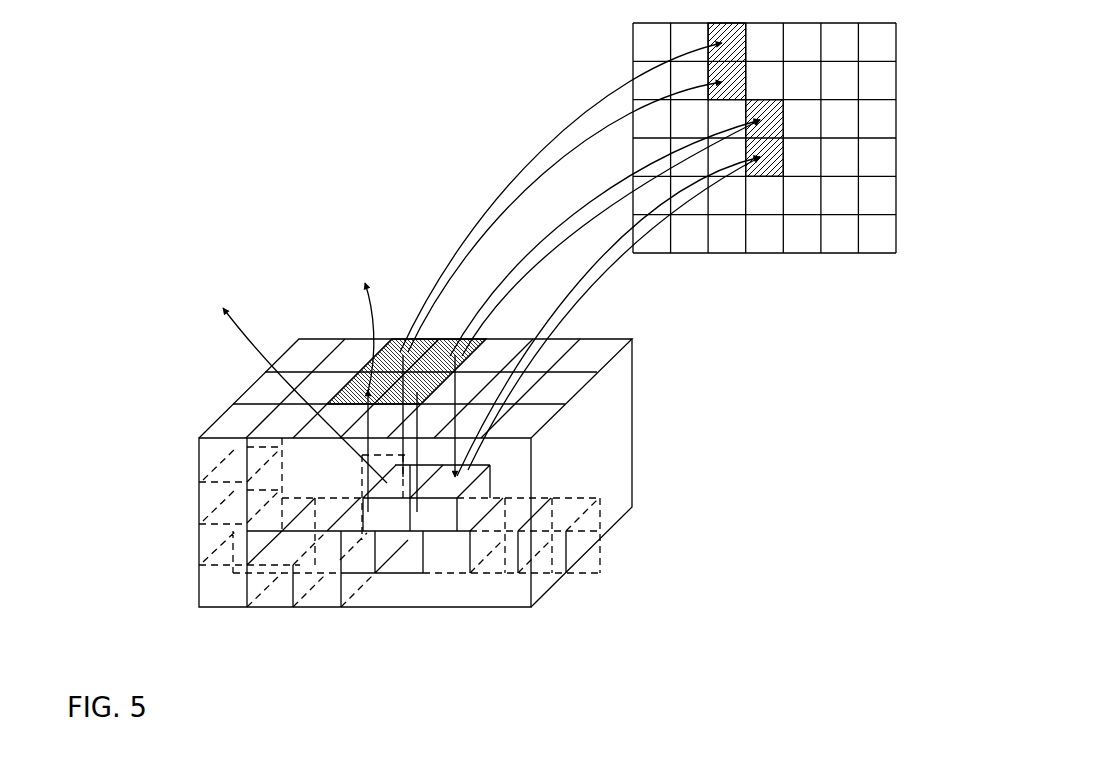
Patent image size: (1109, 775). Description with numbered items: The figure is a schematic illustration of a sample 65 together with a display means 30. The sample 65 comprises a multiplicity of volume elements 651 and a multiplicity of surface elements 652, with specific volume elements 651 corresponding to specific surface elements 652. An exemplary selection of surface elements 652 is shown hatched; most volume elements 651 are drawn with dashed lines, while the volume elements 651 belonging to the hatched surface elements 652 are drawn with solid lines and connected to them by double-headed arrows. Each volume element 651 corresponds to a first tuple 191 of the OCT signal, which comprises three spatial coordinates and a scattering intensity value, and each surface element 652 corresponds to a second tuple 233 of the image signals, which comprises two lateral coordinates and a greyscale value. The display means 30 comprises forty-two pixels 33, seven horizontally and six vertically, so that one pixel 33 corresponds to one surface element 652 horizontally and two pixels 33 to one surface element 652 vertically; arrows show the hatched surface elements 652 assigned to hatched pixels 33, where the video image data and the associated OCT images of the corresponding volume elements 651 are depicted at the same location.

The display means 30 is at (896, 135).
The pixels 33 is at (875, 43).
The sample 65 is at (597, 455).
The volume elements 651 is at (445, 553).
The surface elements 652 is at (330, 403).
The first tuple 191 is at (138, 286).
The second tuple 233 is at (313, 256).